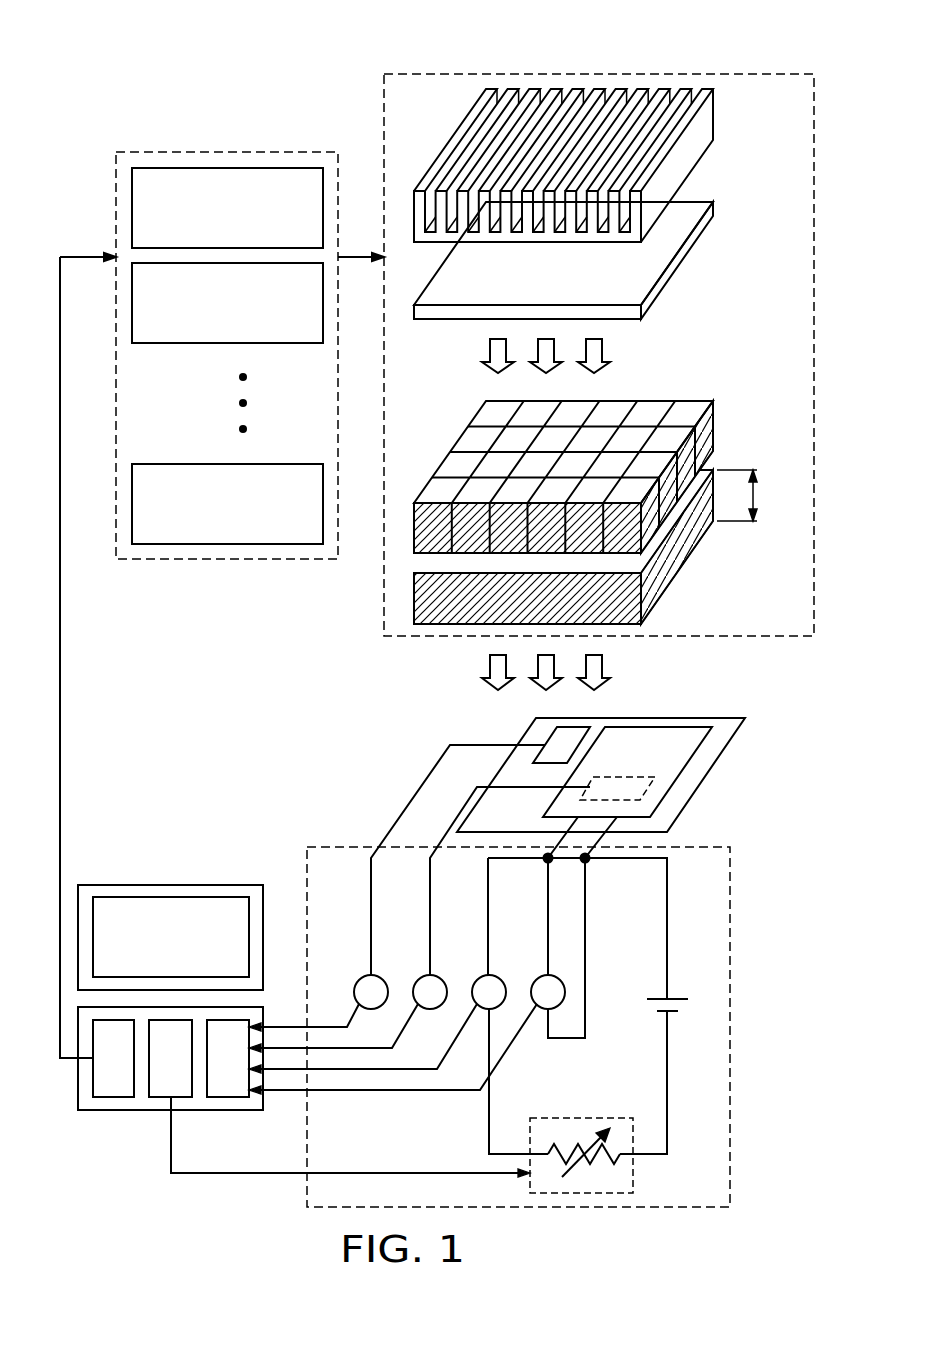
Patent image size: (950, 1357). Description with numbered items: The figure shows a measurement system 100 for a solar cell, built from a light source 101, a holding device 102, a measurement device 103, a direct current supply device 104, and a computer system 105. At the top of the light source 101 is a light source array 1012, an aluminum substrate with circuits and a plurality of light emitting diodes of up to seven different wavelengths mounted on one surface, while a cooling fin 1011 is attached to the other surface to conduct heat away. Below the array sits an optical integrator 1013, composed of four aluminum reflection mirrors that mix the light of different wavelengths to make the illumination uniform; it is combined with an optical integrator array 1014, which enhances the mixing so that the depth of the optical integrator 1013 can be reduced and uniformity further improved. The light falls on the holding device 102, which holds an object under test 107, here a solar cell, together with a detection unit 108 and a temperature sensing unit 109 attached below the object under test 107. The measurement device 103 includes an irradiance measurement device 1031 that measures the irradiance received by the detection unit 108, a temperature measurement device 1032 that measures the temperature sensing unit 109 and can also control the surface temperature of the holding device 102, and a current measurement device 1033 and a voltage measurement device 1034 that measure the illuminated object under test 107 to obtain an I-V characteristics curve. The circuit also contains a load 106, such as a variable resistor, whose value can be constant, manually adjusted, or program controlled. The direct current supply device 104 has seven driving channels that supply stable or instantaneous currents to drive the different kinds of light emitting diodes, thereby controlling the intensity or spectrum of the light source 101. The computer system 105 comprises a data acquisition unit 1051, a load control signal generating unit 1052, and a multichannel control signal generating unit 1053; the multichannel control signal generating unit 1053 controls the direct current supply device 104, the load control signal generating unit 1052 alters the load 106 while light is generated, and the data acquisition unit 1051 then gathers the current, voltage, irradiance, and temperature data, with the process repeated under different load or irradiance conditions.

The measurement system 100 is at (100, 31).
The light source 101 is at (600, 74).
The cooling fin 1011 is at (713, 112).
The light source array 1012 is at (713, 205).
The optical integrator 1013 is at (680, 551).
The optical integrator array 1014 is at (713, 425).
The holding device 102 is at (706, 777).
The measurement device 103 is at (730, 1027).
The irradiance measurement device 1031 is at (360, 976).
The temperature measurement device 1032 is at (420, 976).
The current measurement device 1033 is at (479, 976).
The voltage measurement device 1034 is at (538, 976).
The direct current supply device 104 is at (228, 151).
The computer system 105 is at (171, 884).
The data acquisition unit 1051 is at (228, 1097).
The load control signal generating unit 1052 is at (160, 1097).
The multichannel control signal generating unit 1053 is at (112, 1097).
The load 106 is at (633, 1173).
The object under test 107 is at (686, 724).
The detection unit 108 is at (556, 731).
The temperature sensing unit 109 is at (625, 776).